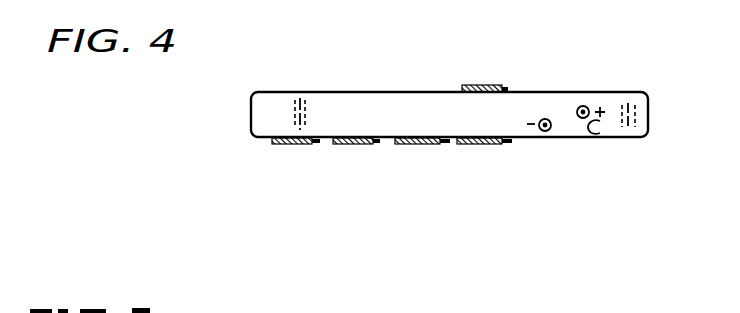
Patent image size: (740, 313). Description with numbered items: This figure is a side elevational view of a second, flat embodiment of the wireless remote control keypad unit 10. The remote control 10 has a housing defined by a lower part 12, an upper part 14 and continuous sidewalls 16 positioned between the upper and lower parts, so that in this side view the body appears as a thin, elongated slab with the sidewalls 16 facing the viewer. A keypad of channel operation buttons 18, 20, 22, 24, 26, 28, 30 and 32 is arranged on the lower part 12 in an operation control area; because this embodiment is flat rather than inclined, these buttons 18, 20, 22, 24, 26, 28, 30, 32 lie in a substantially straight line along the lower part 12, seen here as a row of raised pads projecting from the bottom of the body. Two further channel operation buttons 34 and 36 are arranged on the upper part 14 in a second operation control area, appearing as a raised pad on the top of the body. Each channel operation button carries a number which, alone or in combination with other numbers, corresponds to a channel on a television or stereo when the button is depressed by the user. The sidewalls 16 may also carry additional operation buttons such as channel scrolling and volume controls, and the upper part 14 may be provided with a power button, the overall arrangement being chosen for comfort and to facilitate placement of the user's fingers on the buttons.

The wireless remote control keypad unit 10 is at (378, 57).
The lower part 12 is at (598, 92).
The upper part 14 is at (565, 140).
The continuous sidewalls 16 is at (402, 128).
The channel operation button 18 is at (277, 144).
The channel operation button 20 is at (318, 144).
The channel operation button 22 is at (349, 144).
The channel operation button 24 is at (380, 144).
The channel operation button 26 is at (413, 144).
The channel operation button 28 is at (445, 144).
The channel operation button 30 is at (480, 144).
The channel operation button 32 is at (508, 145).
The channel operation button 34 is at (513, 92).
The channel operation button 36 is at (480, 85).